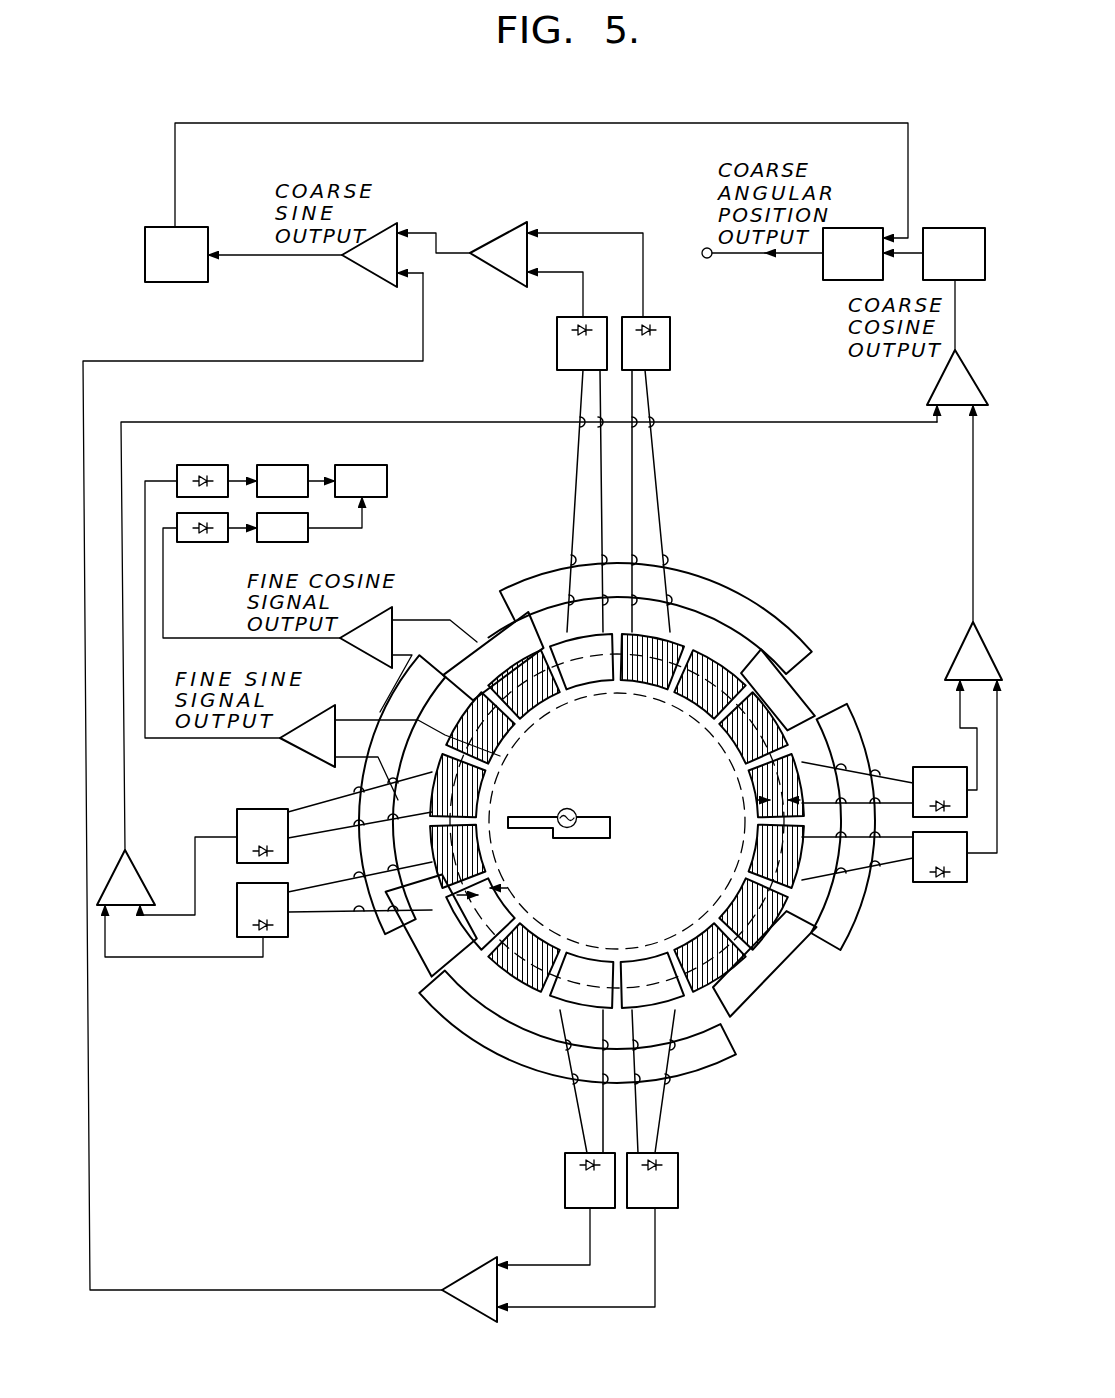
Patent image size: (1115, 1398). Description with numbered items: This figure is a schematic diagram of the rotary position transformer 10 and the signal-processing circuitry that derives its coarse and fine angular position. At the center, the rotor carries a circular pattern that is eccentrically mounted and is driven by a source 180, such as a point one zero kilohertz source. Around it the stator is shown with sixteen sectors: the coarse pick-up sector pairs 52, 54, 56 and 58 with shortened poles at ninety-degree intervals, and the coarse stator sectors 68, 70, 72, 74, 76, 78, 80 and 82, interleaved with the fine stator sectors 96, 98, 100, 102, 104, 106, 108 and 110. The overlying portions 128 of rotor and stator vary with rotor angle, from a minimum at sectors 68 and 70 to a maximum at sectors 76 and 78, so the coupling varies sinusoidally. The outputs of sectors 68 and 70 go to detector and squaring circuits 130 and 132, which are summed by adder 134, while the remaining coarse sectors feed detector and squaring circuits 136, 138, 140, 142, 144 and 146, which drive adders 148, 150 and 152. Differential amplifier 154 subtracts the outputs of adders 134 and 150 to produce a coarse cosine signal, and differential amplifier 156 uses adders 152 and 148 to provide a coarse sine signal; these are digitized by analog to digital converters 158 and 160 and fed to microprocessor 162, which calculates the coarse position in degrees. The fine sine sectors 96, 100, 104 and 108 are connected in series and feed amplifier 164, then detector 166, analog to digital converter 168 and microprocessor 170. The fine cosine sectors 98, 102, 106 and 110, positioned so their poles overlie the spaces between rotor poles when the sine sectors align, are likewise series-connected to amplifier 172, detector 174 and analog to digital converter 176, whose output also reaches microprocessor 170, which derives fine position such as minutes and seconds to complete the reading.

The position transformer 10 is at (757, 580).
The coarse pick-up sector pair 52 is at (420, 828).
The coarse pick-up sector pair 54 is at (619, 1015).
The coarse pick-up sector pair 56 is at (812, 822).
The coarse pick-up sector pair 58 is at (619, 628).
The coarse stator sector 68 is at (480, 790).
The coarse stator sector 70 is at (482, 842).
The coarse stator sector 72 is at (585, 960).
The coarse stator sector 74 is at (632, 960).
The coarse stator sector 76 is at (765, 845).
The coarse stator sector 78 is at (762, 810).
The coarse stator sector 80 is at (626, 690).
The coarse stator sector 82 is at (592, 688).
The fine stator sector 96 is at (505, 740).
The fine stator sector 98 is at (545, 715).
The fine stator sector 100 is at (690, 712).
The fine stator sector 102 is at (735, 735).
The fine stator sector 104 is at (735, 905).
The fine stator sector 106 is at (700, 935).
The fine stator sector 108 is at (545, 925).
The fine stator sector 110 is at (505, 900).
The overlying portions of rotor and stator 128 is at (757, 799).
The detector and squaring circuit 130 is at (250, 809).
The detector and squaring circuit 132 is at (277, 937).
The adder 134 is at (140, 875).
The detector and squaring circuit 136 is at (565, 1160).
The detector and squaring circuit 138 is at (678, 1160).
The detector and squaring circuit 140 is at (935, 882).
The detector and squaring circuit 142 is at (938, 767).
The detector and squaring circuit 144 is at (670, 333).
The detector and squaring circuit 146 is at (557, 336).
The adder 148 is at (472, 1272).
The adder 150 is at (953, 648).
The adder 152 is at (490, 240).
The differential amplifier 154 is at (932, 376).
The differential amplifier 156 is at (372, 240).
The analog to digital converter 158 is at (958, 228).
The analog to digital converter 160 is at (160, 227).
The microprocessor 162 is at (862, 228).
The amplifier 164 is at (296, 752).
The detector 166 is at (206, 465).
The analog to digital converter 168 is at (284, 465).
The microprocessor 170 is at (351, 465).
The amplifier 172 is at (356, 654).
The detector 174 is at (192, 542).
The analog to digital converter 176 is at (298, 542).
The source 180 is at (578, 803).